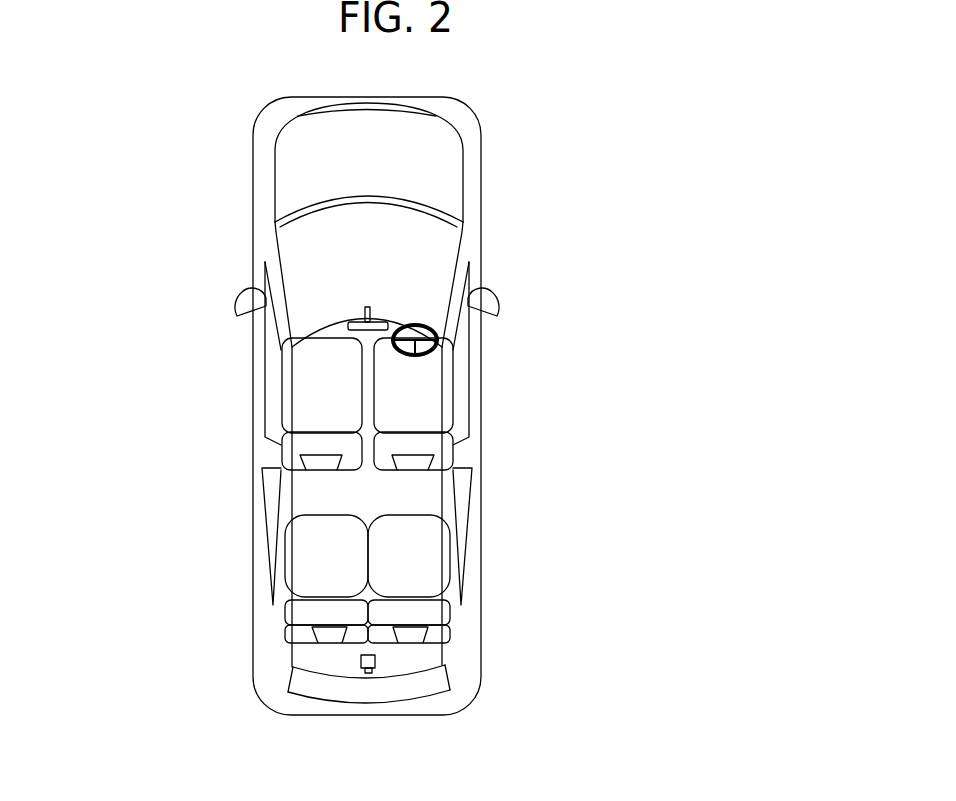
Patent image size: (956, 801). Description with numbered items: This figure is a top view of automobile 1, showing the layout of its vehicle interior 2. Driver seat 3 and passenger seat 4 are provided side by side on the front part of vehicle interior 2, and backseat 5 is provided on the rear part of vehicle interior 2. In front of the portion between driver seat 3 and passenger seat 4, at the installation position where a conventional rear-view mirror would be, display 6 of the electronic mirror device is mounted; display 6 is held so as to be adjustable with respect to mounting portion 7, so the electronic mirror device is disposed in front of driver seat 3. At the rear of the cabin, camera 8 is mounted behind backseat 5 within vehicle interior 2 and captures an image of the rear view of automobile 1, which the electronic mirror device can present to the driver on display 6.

The automobile 1 is at (482, 133).
The vehicle interior 2 is at (413, 493).
The driver seat 3 is at (435, 388).
The passenger seat 4 is at (308, 400).
The backseat 5 is at (427, 562).
The display 6 is at (335, 324).
The mounting portion 7 is at (372, 313).
The camera 8 is at (377, 658).